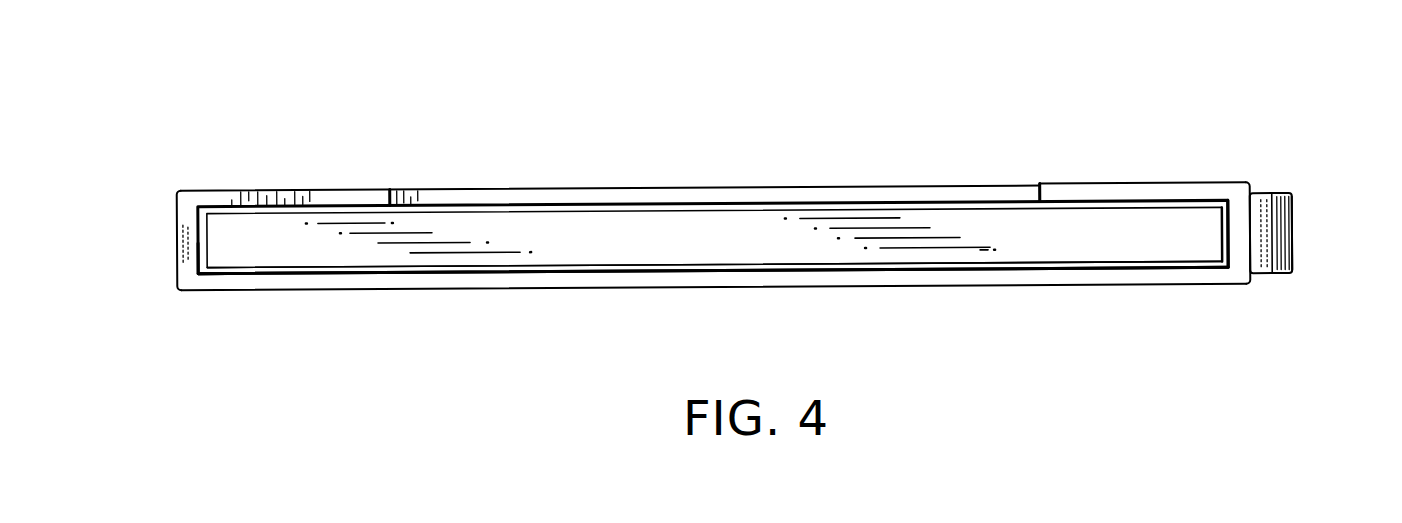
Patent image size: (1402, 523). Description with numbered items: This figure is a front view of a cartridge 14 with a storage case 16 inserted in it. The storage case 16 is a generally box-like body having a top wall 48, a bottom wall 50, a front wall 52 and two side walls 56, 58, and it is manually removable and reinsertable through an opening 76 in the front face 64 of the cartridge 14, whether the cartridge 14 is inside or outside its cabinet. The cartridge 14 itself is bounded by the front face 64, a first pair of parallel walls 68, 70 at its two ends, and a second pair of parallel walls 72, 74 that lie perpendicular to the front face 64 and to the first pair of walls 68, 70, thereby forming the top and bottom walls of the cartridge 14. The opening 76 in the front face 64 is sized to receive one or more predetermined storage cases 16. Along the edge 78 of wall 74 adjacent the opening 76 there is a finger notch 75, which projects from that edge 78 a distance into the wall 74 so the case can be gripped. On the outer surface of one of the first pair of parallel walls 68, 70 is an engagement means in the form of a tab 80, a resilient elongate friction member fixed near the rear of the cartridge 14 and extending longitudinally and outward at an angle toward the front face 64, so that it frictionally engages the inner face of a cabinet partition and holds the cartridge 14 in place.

The cartridge 14 is at (1121, 180).
The storage case 16 is at (1088, 247).
The top wall 48 is at (588, 213).
The bottom wall 50 is at (767, 266).
The front wall 52 is at (598, 246).
The side wall 56 is at (197, 262).
The side wall 58 is at (1224, 242).
The front face 64 is at (188, 198).
The parallel wall 68 is at (174, 247).
The parallel wall 70 is at (1260, 207).
The parallel wall 72 is at (444, 290).
The parallel wall 74 is at (743, 183).
The finger notch 75 is at (1038, 193).
The opening 76 is at (352, 208).
The edge 78 is at (307, 195).
The tab 80 is at (1295, 233).